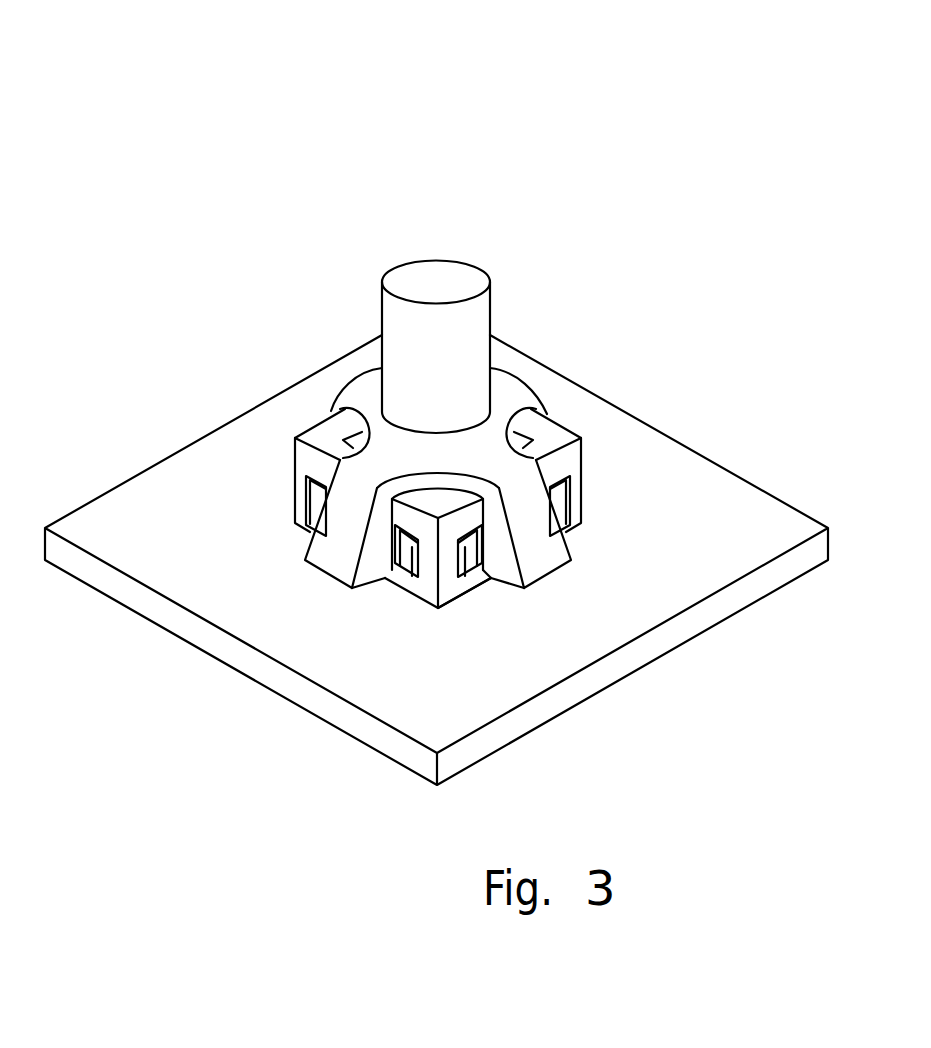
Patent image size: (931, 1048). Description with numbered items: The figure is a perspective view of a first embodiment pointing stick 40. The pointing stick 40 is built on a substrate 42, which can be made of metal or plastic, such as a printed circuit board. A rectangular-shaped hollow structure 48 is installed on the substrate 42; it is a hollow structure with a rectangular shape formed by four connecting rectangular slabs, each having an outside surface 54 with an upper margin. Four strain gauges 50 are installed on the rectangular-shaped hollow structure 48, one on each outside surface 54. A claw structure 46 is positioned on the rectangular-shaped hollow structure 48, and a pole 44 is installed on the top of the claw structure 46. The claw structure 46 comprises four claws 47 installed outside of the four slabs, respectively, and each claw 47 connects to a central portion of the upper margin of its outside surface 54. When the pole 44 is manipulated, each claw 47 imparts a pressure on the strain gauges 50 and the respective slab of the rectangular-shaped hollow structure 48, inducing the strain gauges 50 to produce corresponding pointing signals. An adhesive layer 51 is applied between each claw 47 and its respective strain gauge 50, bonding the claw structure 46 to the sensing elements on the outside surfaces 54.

The pointing stick 40 is at (633, 77).
The substrate 42 is at (758, 485).
The pole 44 is at (448, 283).
The claw structure 46 is at (523, 393).
The claw 47 is at (567, 545).
The rectangular-shaped hollow structure 48 is at (583, 485).
The strain gauge 50 is at (476, 558).
The adhesive layer 51 is at (473, 551).
The outside surface 54 is at (452, 592).